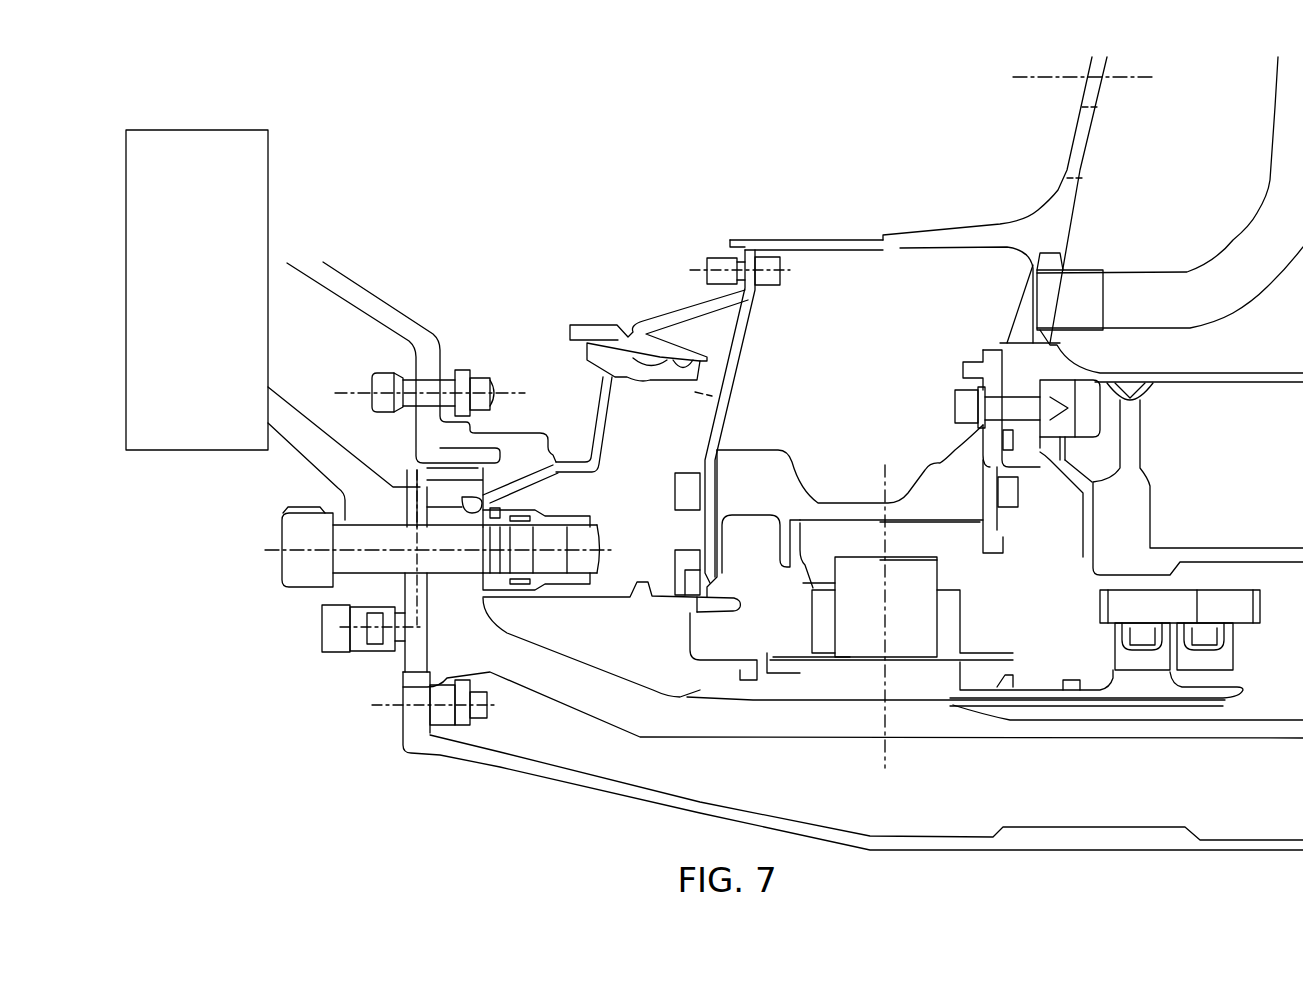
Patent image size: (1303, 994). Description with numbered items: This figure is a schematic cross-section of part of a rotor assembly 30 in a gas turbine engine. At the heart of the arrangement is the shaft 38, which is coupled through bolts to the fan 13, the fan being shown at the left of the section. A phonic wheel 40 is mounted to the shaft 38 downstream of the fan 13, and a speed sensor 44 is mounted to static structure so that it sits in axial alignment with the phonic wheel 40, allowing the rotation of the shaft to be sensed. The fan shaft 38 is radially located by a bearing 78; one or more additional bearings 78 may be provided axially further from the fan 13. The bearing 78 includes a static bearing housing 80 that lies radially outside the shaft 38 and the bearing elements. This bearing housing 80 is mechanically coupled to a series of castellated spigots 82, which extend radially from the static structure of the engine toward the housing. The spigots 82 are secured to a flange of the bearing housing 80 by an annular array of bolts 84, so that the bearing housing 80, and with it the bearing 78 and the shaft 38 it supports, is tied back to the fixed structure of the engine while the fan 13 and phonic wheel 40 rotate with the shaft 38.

The fan 13 is at (213, 304).
The rotor assembly 30 is at (283, 627).
The shaft 38 is at (918, 725).
The phonic wheel 40 is at (1150, 687).
The speed sensor 44 is at (1170, 640).
The bearing 78 is at (975, 617).
The bearing housing 80 is at (757, 447).
The castellated spigots 82 is at (1017, 373).
The bolts 84 is at (958, 411).